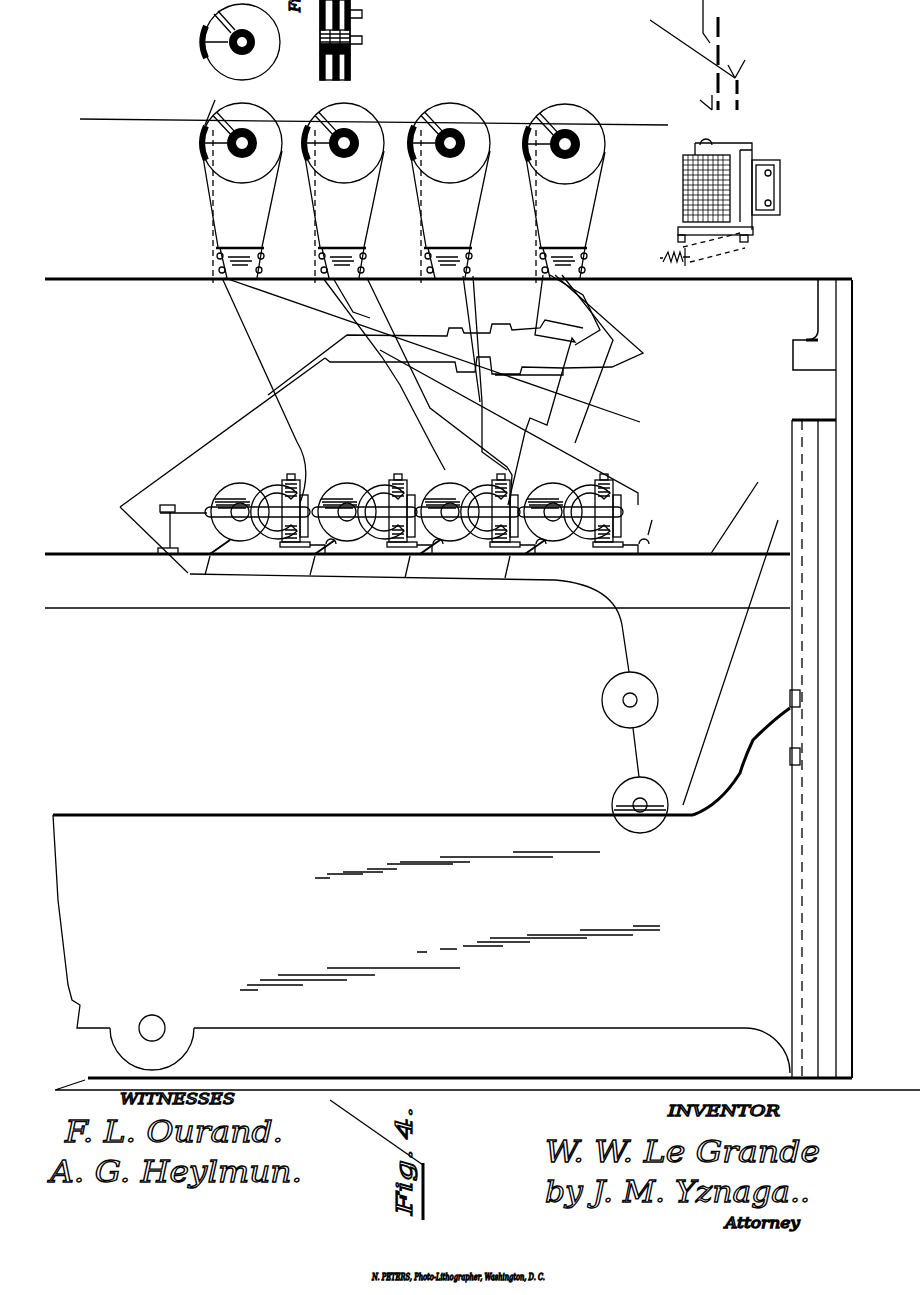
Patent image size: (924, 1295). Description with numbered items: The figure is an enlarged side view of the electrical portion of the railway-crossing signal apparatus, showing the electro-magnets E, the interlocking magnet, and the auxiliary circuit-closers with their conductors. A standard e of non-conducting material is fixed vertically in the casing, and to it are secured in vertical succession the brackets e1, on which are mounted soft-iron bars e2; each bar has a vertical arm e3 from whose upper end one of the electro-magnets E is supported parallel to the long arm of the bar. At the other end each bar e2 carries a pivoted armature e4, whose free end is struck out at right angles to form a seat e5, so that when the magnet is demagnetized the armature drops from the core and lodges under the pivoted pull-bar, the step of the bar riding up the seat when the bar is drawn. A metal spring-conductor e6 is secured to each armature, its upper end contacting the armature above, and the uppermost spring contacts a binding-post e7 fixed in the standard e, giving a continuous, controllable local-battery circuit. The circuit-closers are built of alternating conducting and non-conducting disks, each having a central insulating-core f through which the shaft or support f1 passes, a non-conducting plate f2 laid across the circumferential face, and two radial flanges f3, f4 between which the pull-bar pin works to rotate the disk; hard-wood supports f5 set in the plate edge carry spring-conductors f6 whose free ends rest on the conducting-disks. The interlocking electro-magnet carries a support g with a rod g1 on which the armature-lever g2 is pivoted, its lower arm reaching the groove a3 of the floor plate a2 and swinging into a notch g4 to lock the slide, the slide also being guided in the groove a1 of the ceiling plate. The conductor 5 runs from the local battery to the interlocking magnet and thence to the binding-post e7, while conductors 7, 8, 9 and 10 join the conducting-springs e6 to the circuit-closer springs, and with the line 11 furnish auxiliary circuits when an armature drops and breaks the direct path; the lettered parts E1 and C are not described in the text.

In FIG. 3, the insulating-core f is at (403, 143).
In FIG. 3, the shaft or support f1 is at (227, 31).
In FIG. 3, the non-conducting plate f2 is at (226, 42).
In FIG. 3, the radial flange f3 is at (345, 40).
In FIG. 3, the radial flange f4 is at (200, 105).
In FIG. 3, the hard-wood support f5 is at (400, 206).
In FIG. 3, the spring-conductor f6 is at (391, 199).
In FIG. 3, the electro-magnet E is at (717, 190).
In FIG. 3, the armature E1 is at (397, 133).
In FIG. 3, the standard e is at (380, 675).
In FIG. 3, the bracket e1 is at (406, 550).
In FIG. 3, the soft-iron bar e2 is at (697, 69).
In FIG. 3, the vertical arm e3 is at (722, 117).
In FIG. 3, the armature e4 is at (532, 495).
In FIG. 3, the seat e5 is at (365, 470).
In FIG. 3, the spring-conductor e6 is at (278, 490).
In FIG. 3, the binding-post e7 is at (158, 529).
In FIG. 3, the spring C is at (659, 260).
In FIG. 3, the support g is at (714, 248).
In FIG. 3, the rod g1 is at (780, 680).
In FIG. 3, the armature-lever g2 is at (633, 752).
In FIG. 3, the notch g4 is at (746, 761).
In FIG. 3, the longitudinal groove a1 is at (486, 952).
In FIG. 3, the metal plate a2 is at (822, 679).
In FIG. 3, the groove a3 is at (792, 420).
In FIG. 3, the conductor 5 is at (733, 643).
In FIG. 3, the conductor 7 is at (431, 390).
In FIG. 3, the conductor 8 is at (425, 357).
In FIG. 4, the conductor 8 is at (417, 1160).
In FIG. 3, the conductor 9 is at (480, 391).
In FIG. 3, the conductor 10 is at (505, 390).
In FIG. 3, the line 11 is at (222, 465).